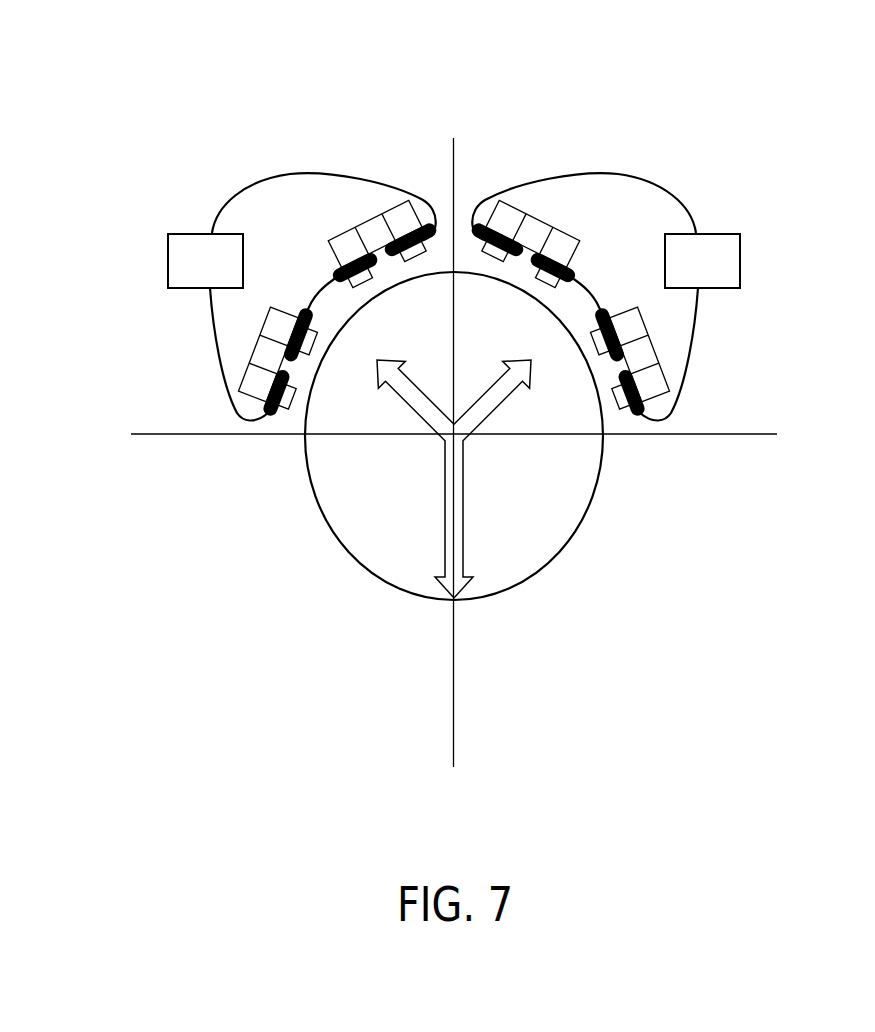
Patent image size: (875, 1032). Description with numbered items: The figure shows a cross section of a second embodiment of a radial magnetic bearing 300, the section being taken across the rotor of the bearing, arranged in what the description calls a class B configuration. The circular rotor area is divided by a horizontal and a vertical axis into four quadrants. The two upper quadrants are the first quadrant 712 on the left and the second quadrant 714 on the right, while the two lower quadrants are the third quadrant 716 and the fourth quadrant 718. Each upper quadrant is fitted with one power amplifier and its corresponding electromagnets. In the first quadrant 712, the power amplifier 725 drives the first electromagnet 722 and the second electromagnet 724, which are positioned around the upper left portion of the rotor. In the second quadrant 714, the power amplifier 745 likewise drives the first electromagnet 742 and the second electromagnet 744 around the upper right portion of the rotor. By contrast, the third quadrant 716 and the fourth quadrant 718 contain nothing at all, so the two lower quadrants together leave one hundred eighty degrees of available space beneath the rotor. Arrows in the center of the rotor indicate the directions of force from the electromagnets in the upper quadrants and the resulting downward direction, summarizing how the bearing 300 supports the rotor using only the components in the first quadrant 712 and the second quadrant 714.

The system 300 is at (750, 98).
The first quadrant 712 is at (133, 210).
The second quadrant 714 is at (669, 285).
The third quadrant 716 is at (816, 731).
The fourth quadrant 718 is at (134, 702).
The first electromagnet of the first quadrant 722 is at (247, 397).
The second electromagnet of the first quadrant 724 is at (393, 210).
The power amplifier 725 is at (193, 233).
The first electromagnet of the second quadrant 742 is at (529, 187).
The second electromagnet of the second quadrant 744 is at (694, 361).
The power amplifier 745 is at (717, 210).